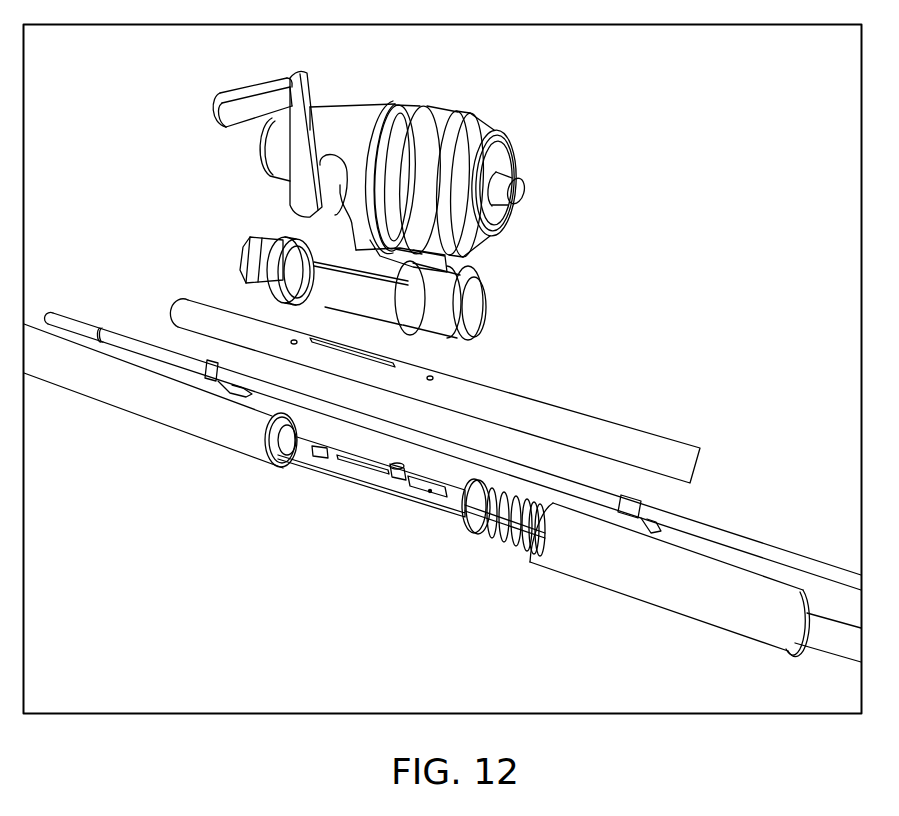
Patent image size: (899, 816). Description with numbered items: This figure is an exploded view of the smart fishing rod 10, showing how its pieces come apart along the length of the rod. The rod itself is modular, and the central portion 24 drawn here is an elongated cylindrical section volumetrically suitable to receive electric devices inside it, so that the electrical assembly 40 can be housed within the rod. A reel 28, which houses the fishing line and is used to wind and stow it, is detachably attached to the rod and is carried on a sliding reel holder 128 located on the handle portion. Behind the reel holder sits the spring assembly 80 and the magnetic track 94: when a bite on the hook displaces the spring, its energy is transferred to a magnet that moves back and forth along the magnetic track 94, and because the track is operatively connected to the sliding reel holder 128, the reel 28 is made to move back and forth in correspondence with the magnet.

The smart fishing rod 10 is at (643, 266).
The reel 28 is at (513, 130).
The central portion 24 is at (468, 313).
The sliding reel holder 128 is at (542, 405).
The electrical assembly 40 is at (313, 460).
The magnetic track 94 is at (395, 477).
The spring assembly 80 is at (490, 538).